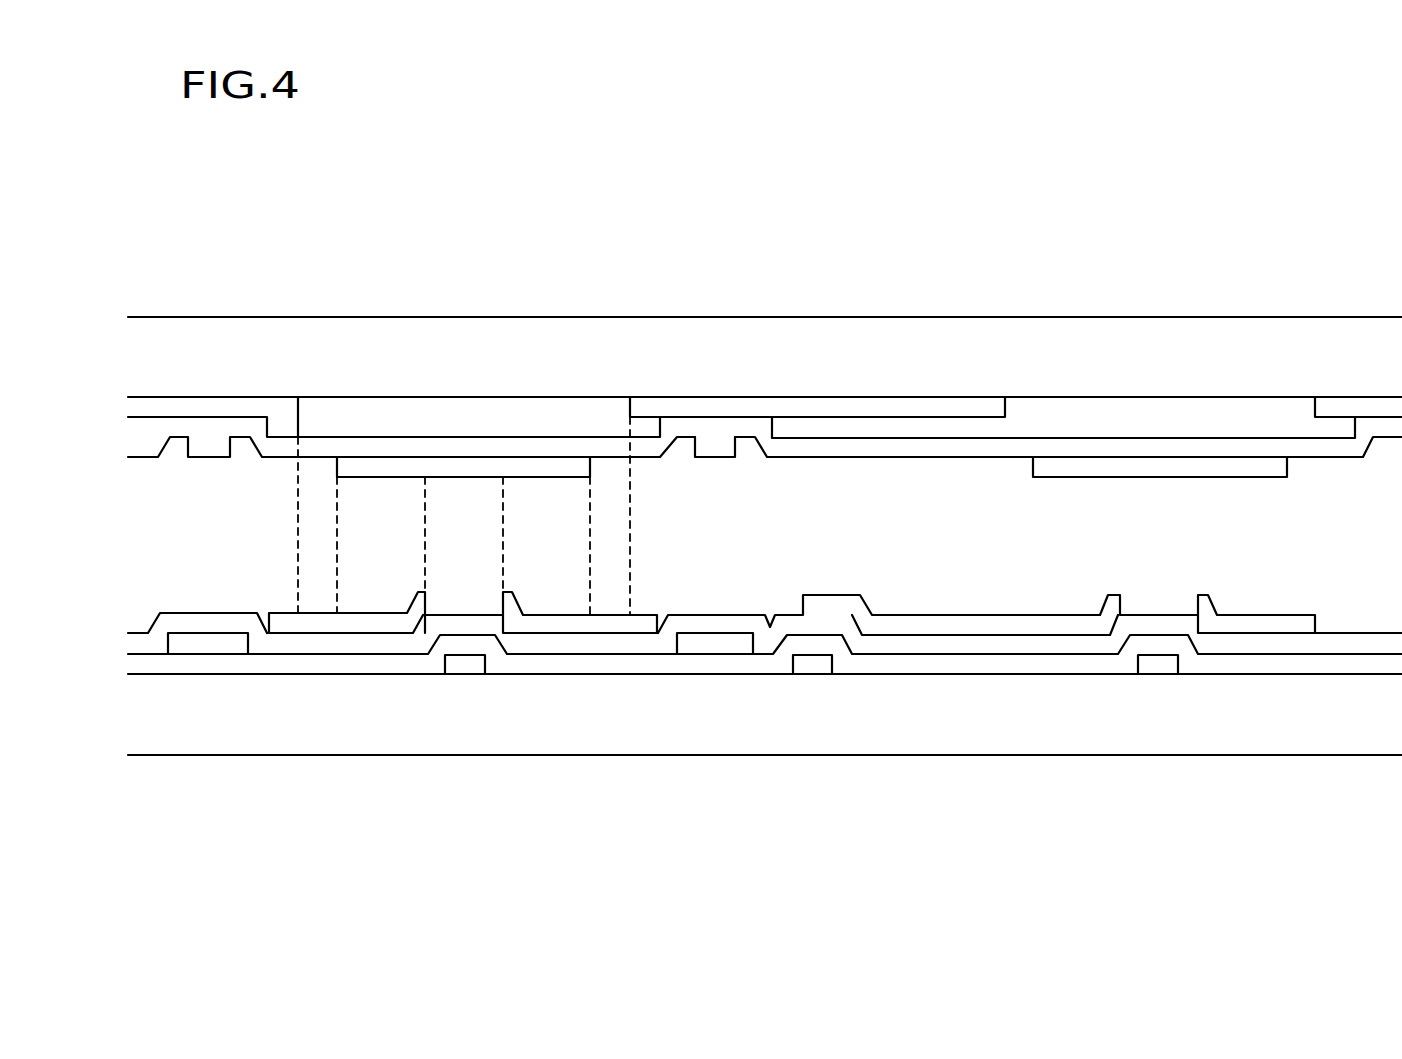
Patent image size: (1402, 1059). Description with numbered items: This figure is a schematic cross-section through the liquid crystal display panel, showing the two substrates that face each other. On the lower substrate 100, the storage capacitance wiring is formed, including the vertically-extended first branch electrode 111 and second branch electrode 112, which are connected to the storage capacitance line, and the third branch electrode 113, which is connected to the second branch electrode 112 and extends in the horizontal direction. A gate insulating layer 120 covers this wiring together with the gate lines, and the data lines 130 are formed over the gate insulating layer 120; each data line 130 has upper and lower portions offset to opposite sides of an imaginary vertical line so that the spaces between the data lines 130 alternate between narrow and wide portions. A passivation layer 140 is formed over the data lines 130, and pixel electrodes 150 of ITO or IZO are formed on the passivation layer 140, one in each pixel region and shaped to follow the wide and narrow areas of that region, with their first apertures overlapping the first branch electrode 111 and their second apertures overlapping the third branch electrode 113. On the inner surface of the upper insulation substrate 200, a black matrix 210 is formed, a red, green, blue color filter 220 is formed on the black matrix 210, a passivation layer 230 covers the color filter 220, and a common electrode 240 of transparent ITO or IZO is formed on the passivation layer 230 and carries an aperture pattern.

The lower substrate 100 is at (529, 746).
The first branch electrode 111 is at (466, 665).
The second branch electrode 112 is at (811, 665).
The third branch electrode 113 is at (1158, 665).
The gate insulating layer 120 is at (968, 665).
The data line 130 is at (205, 646).
The passivation layer 140 is at (655, 646).
The pixel electrode 150 is at (342, 625).
The insulation substrate 200 is at (794, 337).
The black matrix 210 is at (912, 407).
The color filter 220 is at (1080, 409).
The passivation layer 230 is at (528, 444).
The common electrode 240 is at (390, 467).